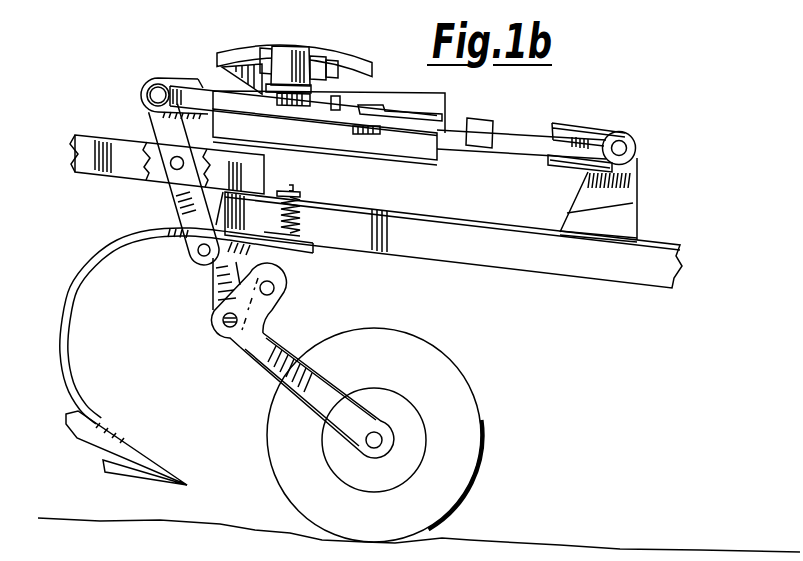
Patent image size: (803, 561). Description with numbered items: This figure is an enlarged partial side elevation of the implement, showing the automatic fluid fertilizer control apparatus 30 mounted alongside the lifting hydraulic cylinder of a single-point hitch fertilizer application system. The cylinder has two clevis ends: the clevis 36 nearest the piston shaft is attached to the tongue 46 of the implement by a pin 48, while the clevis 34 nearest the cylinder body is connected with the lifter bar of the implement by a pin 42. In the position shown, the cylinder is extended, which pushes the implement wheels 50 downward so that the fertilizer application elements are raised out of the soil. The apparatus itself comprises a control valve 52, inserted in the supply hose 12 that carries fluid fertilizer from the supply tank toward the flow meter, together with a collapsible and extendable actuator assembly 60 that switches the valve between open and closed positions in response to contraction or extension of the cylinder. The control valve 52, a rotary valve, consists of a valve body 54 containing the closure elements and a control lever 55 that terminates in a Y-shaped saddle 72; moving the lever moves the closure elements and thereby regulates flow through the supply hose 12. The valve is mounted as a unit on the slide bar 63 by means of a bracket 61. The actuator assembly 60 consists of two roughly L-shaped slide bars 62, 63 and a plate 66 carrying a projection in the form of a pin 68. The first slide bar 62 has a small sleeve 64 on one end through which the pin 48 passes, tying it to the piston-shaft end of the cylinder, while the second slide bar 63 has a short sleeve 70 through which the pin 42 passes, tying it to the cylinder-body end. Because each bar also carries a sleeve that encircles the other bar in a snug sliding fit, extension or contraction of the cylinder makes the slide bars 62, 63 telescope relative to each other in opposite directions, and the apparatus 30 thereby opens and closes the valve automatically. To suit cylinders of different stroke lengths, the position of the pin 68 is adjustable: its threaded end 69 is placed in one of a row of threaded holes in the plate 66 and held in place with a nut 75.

The supply hose 12 is at (228, 53).
The automatic fluid fertilizer control apparatus 30 is at (477, 108).
The clevis 34 is at (158, 78).
The clevis 36 is at (585, 126).
The pin 42 is at (150, 91).
The tongue 46 is at (655, 236).
The pin 48 is at (637, 146).
The implement wheels 50 is at (482, 405).
The control valve 52 is at (292, 46).
The valve body 54 is at (304, 58).
The control lever 55 is at (333, 70).
The collapsible and extendable actuator assembly 60 is at (449, 152).
The bracket 61 is at (228, 92).
The first slide bar 62 is at (412, 124).
The second slide bar 63 is at (201, 92).
The small sleeve 64 is at (626, 134).
The plate 66 is at (346, 132).
The pin 68 is at (336, 108).
The threaded end 69 is at (335, 112).
The short sleeve 70 is at (150, 97).
The Y-shaped saddle 72 is at (258, 66).
The nut 75 is at (340, 122).